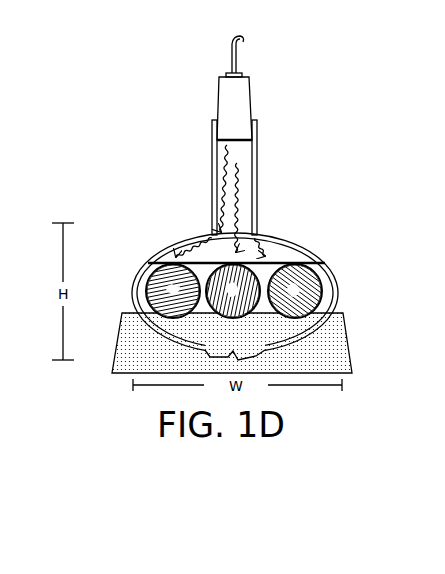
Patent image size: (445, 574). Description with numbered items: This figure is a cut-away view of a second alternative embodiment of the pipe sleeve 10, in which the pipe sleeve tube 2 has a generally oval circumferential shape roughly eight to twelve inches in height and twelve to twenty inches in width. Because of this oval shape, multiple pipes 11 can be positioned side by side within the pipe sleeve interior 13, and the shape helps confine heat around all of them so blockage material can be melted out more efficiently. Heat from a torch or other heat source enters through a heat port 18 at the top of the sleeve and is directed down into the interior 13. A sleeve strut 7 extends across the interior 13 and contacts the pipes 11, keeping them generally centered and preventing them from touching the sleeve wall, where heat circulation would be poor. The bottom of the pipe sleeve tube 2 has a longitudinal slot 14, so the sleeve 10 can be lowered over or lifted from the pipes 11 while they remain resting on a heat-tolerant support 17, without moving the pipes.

The pipe sleeve 10 is at (103, 213).
The pipe sleeve interior 13 is at (217, 254).
The heat port 18 is at (253, 234).
The sleeve strut 7 is at (273, 258).
The pipe sleeve tube 2 is at (317, 257).
The pipe 11 is at (322, 282).
The support 17 is at (130, 347).
The longitudinal slot 14 is at (237, 363).